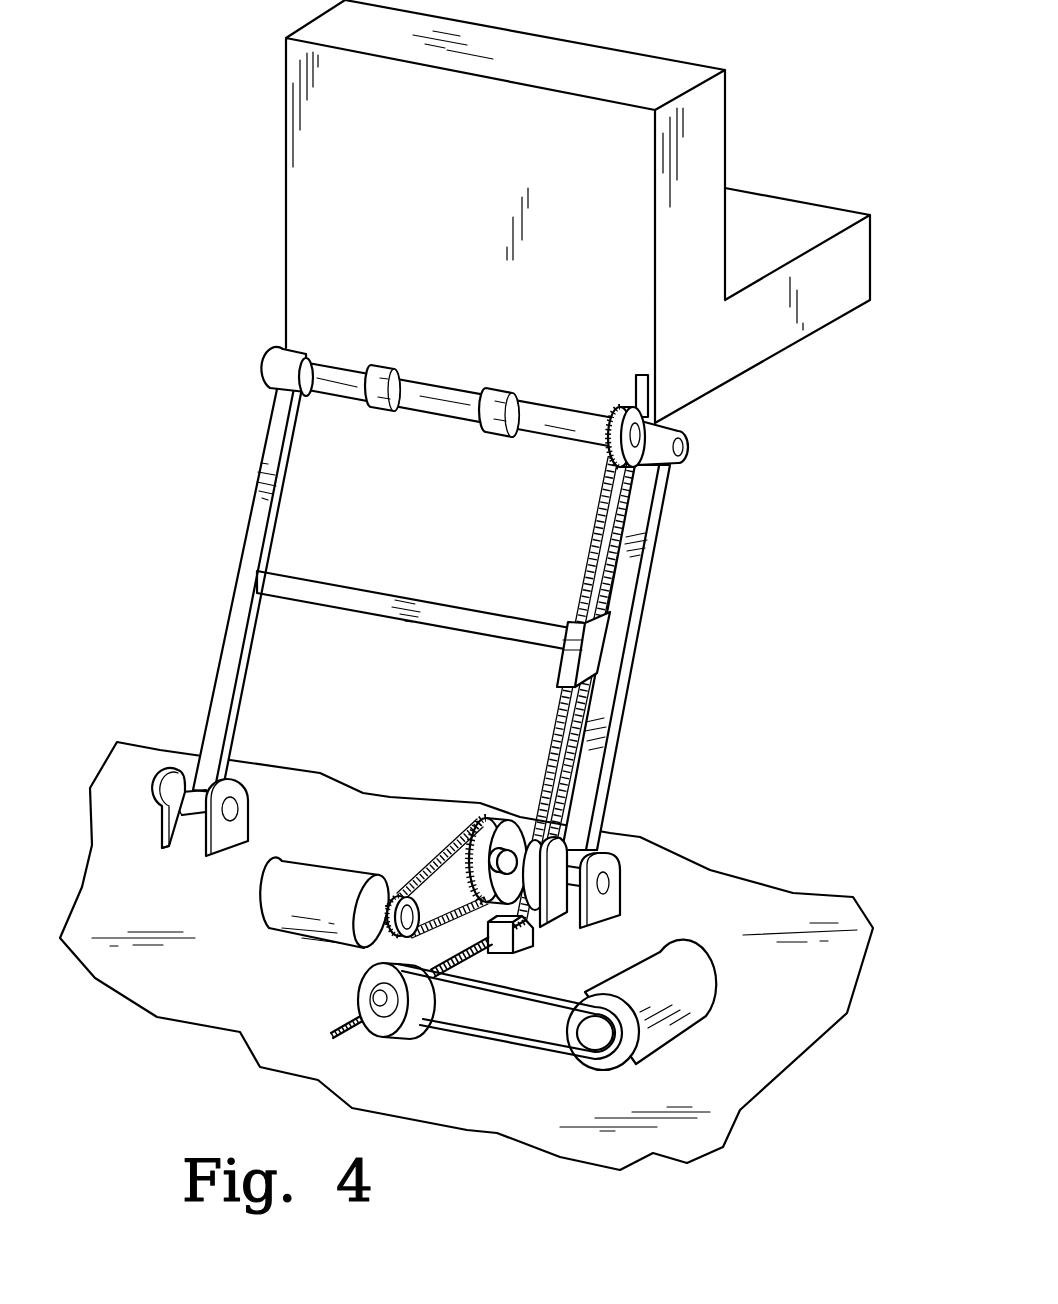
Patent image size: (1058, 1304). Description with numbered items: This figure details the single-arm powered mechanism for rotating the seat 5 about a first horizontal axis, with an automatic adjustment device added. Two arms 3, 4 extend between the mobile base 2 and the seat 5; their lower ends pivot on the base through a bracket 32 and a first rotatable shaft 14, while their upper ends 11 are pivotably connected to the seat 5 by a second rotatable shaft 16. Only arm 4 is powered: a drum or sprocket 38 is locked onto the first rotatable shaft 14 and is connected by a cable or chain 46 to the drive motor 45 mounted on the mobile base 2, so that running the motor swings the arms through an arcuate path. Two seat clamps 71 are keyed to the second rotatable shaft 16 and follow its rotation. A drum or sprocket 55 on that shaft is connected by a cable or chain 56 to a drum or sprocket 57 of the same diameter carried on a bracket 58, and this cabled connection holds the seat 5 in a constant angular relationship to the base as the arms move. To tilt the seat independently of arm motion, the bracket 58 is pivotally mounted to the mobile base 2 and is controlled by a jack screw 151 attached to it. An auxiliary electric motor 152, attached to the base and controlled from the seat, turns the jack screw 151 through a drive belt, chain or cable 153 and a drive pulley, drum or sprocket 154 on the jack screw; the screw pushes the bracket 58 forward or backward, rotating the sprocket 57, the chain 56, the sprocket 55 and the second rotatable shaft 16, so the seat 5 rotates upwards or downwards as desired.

The mobile base 2 is at (183, 990).
The arm 3 is at (238, 618).
The arm 4 is at (617, 645).
The seat 5 is at (312, 254).
The end of arm 11 is at (278, 420).
The first rotatable shaft 14 is at (512, 856).
The second rotatable shaft 16 is at (565, 427).
The bracket 32 is at (603, 908).
The drum or sprocket 38 is at (507, 840).
The drive motor 45 is at (283, 885).
The cable or chain 46 is at (440, 858).
The drum or sprocket 55 is at (612, 408).
The cable or chain 56 is at (590, 543).
The drum or sprocket 57 is at (560, 850).
The bracket 58 is at (553, 903).
The seat clamp 71 is at (377, 413).
The jack screw 151 is at (467, 963).
The auxiliary electric motor 152 is at (663, 1043).
The drive belt, chain or cable 153 is at (458, 1032).
The screw pulley 154 is at (368, 985).